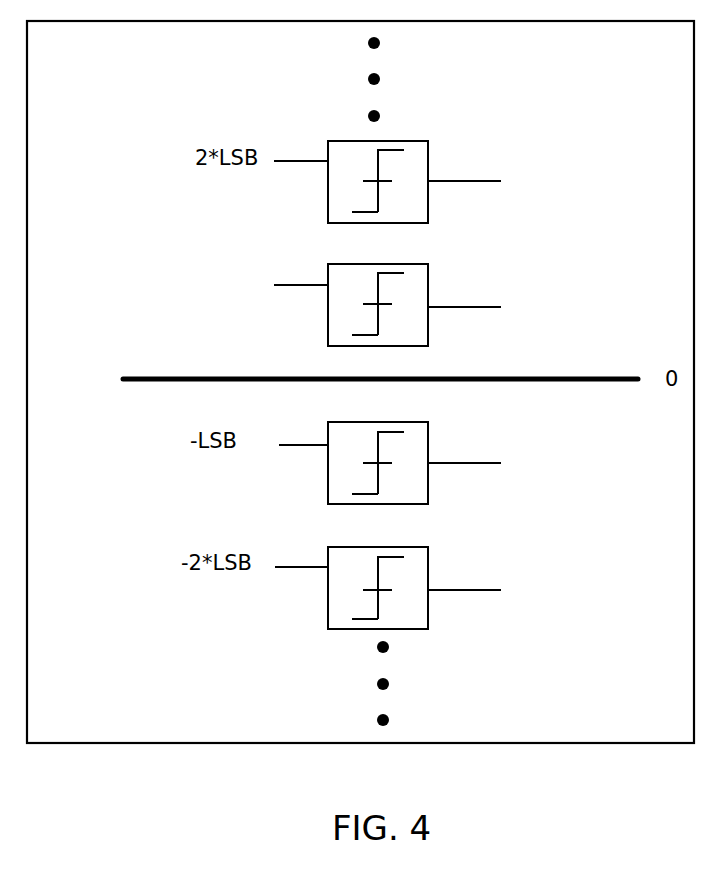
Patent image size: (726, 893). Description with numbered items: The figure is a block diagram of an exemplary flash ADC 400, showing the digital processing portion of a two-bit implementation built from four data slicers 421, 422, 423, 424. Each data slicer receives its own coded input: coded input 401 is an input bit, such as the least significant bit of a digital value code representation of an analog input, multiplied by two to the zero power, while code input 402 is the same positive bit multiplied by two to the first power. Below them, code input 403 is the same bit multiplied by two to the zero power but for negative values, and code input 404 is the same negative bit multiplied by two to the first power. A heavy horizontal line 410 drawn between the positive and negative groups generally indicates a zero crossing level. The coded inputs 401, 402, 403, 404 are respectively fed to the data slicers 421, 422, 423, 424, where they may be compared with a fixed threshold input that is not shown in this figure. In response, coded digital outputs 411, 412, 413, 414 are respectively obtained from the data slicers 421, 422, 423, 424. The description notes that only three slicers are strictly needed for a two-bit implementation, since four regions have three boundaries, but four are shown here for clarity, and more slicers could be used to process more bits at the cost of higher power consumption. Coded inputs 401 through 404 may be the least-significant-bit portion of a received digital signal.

The flash ADC 400 is at (133, 85).
The coded input 401 is at (298, 285).
The code input 402 is at (298, 161).
The code input 403 is at (295, 445).
The code input 404 is at (295, 567).
The line 410 is at (146, 377).
The coded digital output 411 is at (501, 307).
The coded digital output 412 is at (501, 181).
The coded digital output 413 is at (501, 463).
The coded digital output 414 is at (501, 590).
The data slicer 421 is at (430, 270).
The data slicer 422 is at (430, 145).
The data slicer 423 is at (430, 426).
The data slicer 424 is at (430, 560).